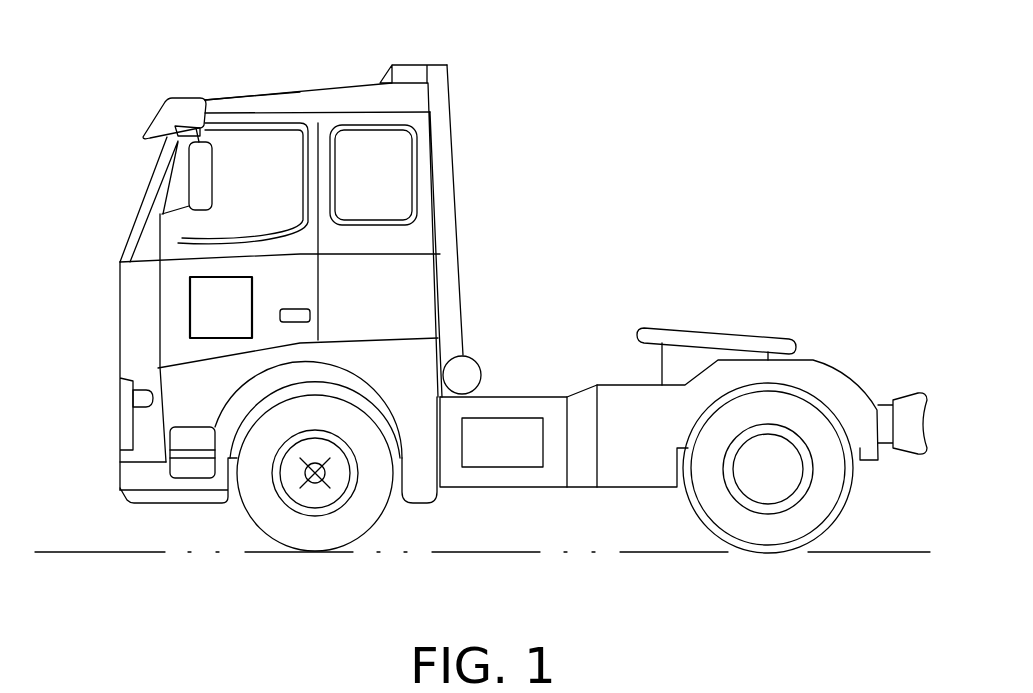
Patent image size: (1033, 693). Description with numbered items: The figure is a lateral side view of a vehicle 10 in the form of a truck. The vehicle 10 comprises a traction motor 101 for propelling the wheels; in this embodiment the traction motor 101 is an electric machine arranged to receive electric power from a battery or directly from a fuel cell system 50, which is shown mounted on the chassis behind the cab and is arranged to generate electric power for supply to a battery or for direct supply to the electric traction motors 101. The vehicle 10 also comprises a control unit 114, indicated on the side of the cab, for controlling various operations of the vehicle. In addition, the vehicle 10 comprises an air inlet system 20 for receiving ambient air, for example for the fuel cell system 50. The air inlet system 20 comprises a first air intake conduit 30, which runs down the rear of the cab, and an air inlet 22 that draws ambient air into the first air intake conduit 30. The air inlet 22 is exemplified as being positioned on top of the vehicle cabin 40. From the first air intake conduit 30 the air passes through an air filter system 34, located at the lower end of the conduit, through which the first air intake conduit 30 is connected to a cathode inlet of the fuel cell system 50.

The vehicle 10 is at (482, 312).
The air inlet system 20 is at (318, 255).
The air inlet 22 is at (383, 80).
The first air intake conduit 30 is at (455, 256).
The air filter system 34 is at (459, 377).
The vehicle cabin 40 is at (300, 100).
The fuel cell system 50 is at (503, 442).
The traction motor 101 is at (314, 476).
The control unit 114 is at (188, 306).